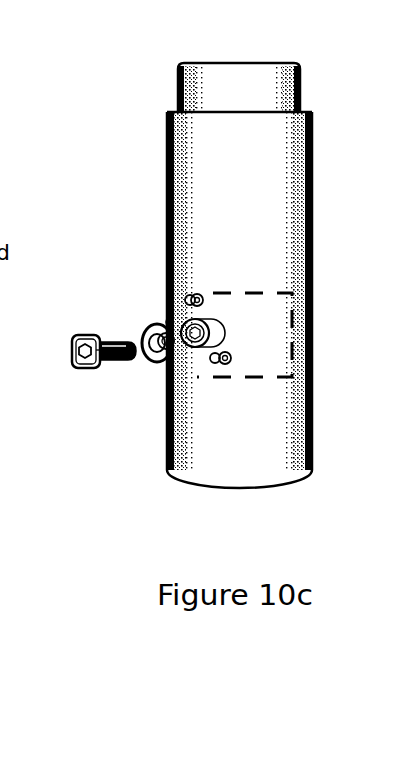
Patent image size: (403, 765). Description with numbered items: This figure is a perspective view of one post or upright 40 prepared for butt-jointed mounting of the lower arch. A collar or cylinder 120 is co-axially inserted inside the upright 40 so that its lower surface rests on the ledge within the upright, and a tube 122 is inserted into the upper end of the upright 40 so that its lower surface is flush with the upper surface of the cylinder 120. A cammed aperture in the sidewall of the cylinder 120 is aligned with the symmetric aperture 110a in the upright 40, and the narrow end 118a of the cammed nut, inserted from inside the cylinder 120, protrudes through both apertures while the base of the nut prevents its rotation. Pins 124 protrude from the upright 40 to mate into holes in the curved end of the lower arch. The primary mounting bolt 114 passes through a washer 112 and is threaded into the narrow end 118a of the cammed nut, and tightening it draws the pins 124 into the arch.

The upright 40 is at (312, 229).
The tube 122 is at (312, 171).
The collar or cylinder 120 is at (293, 338).
The aperture 110a is at (222, 323).
The pins 124 is at (186, 296).
The narrow end of nut 118a is at (170, 318).
The washer 112 is at (150, 362).
The primary mounting bolt 114 is at (82, 368).